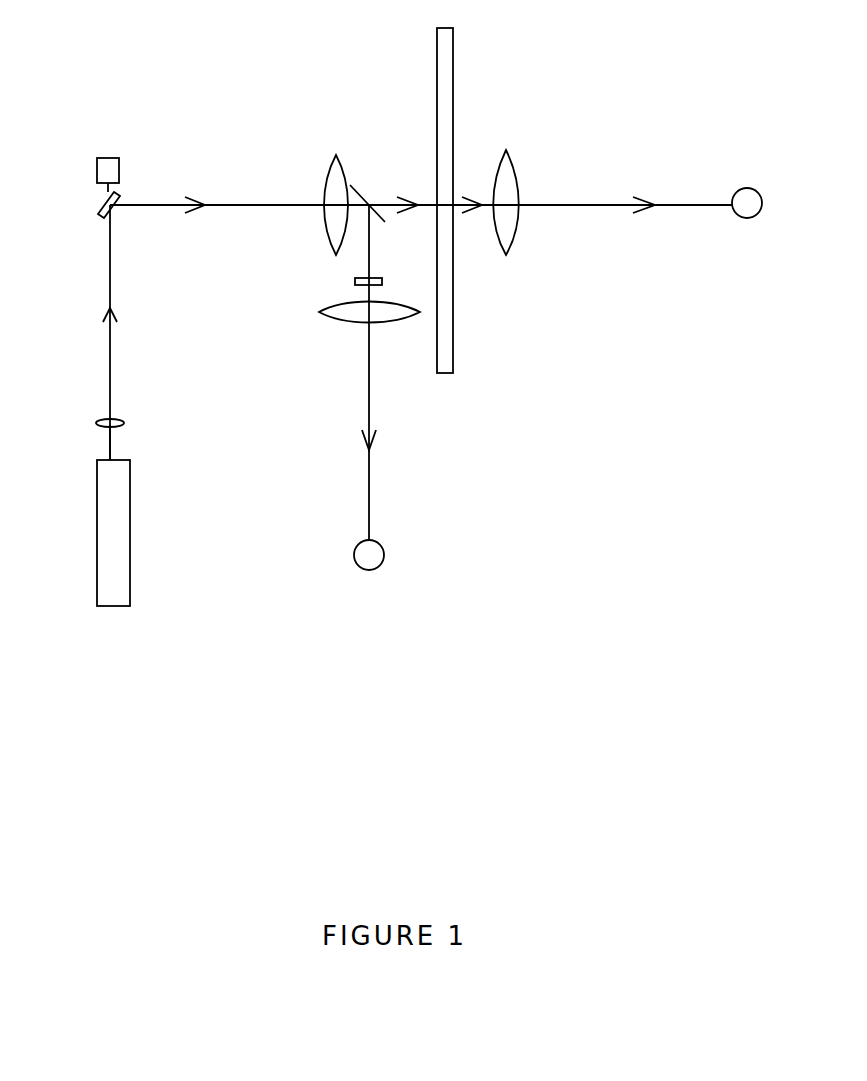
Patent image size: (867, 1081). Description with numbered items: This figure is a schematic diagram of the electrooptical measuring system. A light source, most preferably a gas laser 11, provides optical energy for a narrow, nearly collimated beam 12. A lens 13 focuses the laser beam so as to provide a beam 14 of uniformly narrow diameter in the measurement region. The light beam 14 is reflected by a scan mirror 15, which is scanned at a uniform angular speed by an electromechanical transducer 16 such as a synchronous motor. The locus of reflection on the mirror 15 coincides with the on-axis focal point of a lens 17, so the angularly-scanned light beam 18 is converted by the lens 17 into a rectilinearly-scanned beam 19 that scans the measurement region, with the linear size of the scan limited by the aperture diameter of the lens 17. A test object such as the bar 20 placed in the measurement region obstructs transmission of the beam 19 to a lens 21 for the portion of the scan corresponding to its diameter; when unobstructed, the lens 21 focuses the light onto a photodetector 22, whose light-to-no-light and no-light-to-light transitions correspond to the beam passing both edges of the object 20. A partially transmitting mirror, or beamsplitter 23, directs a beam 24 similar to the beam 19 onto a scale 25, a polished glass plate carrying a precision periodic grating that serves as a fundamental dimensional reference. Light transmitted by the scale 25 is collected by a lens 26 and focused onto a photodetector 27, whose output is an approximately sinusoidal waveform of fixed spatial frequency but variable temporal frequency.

The gas laser 11 is at (97, 542).
The collimated beam 12 is at (110, 450).
The lens 13 is at (97, 422).
The light beam 14 is at (110, 348).
The scan mirror 15 is at (98, 203).
The electromechanical transducer 16 is at (106, 158).
The lens 17 is at (322, 190).
The angularly-scanned light beam 18 is at (237, 205).
The rectilinearly-scanned beam 19 is at (424, 200).
The bar 20 is at (505, 25).
The lens 21 is at (548, 130).
The photodetector 22 is at (735, 190).
The beamsplitter 23 is at (367, 194).
The beam 24 is at (368, 255).
The scale 25 is at (355, 282).
The lens 26 is at (345, 322).
The photodetector 27 is at (383, 545).